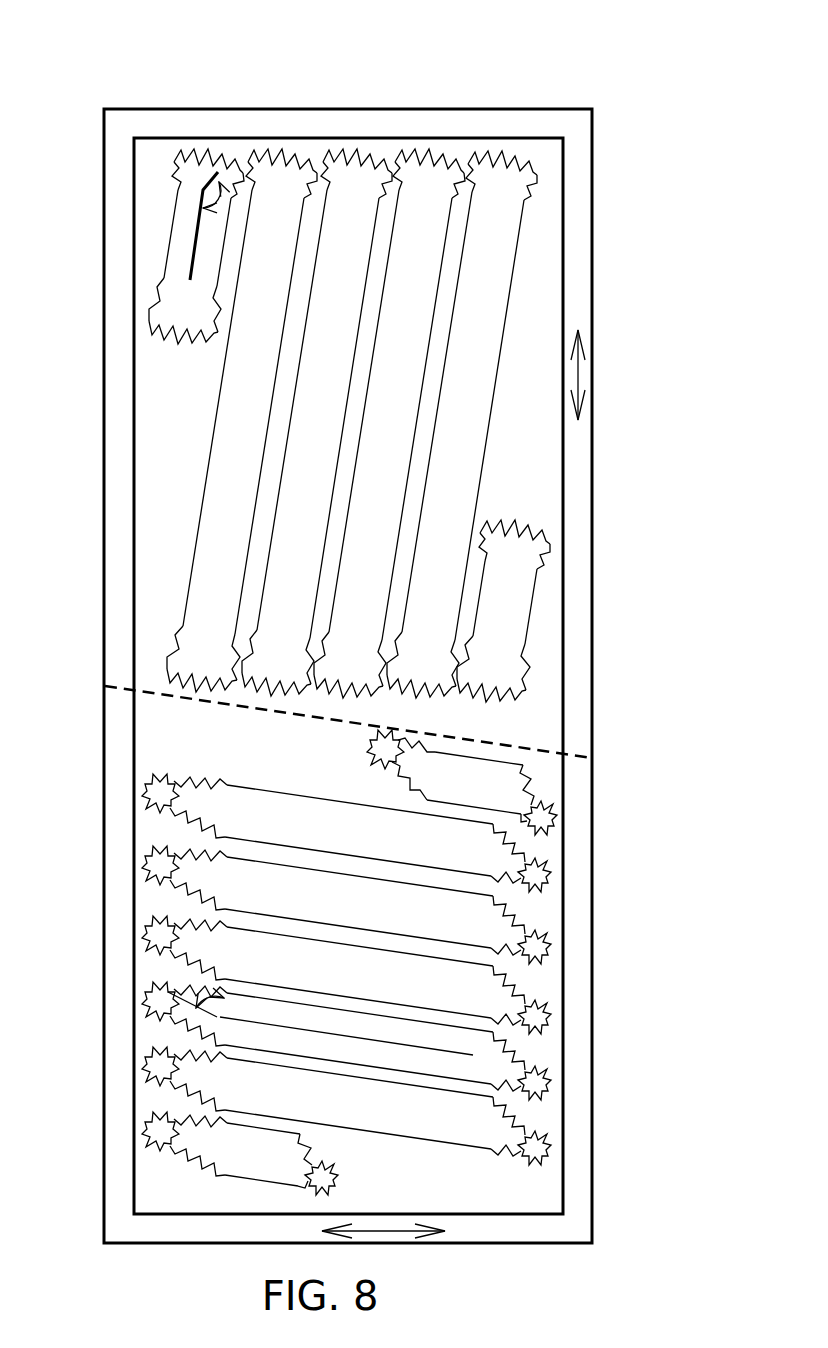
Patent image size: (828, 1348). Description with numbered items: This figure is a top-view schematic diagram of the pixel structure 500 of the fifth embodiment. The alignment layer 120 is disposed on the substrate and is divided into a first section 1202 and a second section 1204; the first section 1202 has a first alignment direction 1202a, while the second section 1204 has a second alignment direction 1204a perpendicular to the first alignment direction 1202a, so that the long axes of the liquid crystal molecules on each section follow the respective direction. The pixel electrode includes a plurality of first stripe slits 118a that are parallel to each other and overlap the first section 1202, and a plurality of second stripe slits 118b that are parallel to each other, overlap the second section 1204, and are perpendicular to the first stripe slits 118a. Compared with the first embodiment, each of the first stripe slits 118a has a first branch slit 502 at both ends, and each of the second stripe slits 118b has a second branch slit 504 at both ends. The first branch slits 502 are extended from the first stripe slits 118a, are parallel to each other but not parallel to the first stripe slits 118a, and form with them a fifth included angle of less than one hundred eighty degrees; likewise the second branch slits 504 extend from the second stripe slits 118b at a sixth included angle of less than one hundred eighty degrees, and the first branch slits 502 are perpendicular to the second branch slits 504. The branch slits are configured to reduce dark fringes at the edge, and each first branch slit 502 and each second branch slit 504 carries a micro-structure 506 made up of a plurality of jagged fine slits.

The pixel structure 500 is at (610, 88).
The alignment layer 120 is at (598, 216).
The first section 1202 is at (371, 383).
The first alignment direction 1202a is at (592, 378).
The second section 1204 is at (371, 927).
The second alignment direction 1204a is at (385, 1232).
The first stripe slits 118a is at (266, 237).
The second stripe slits 118b is at (458, 773).
The first branch slit 502 is at (283, 183).
The second branch slit 504 is at (404, 756).
The micro-structure 506 is at (270, 183).